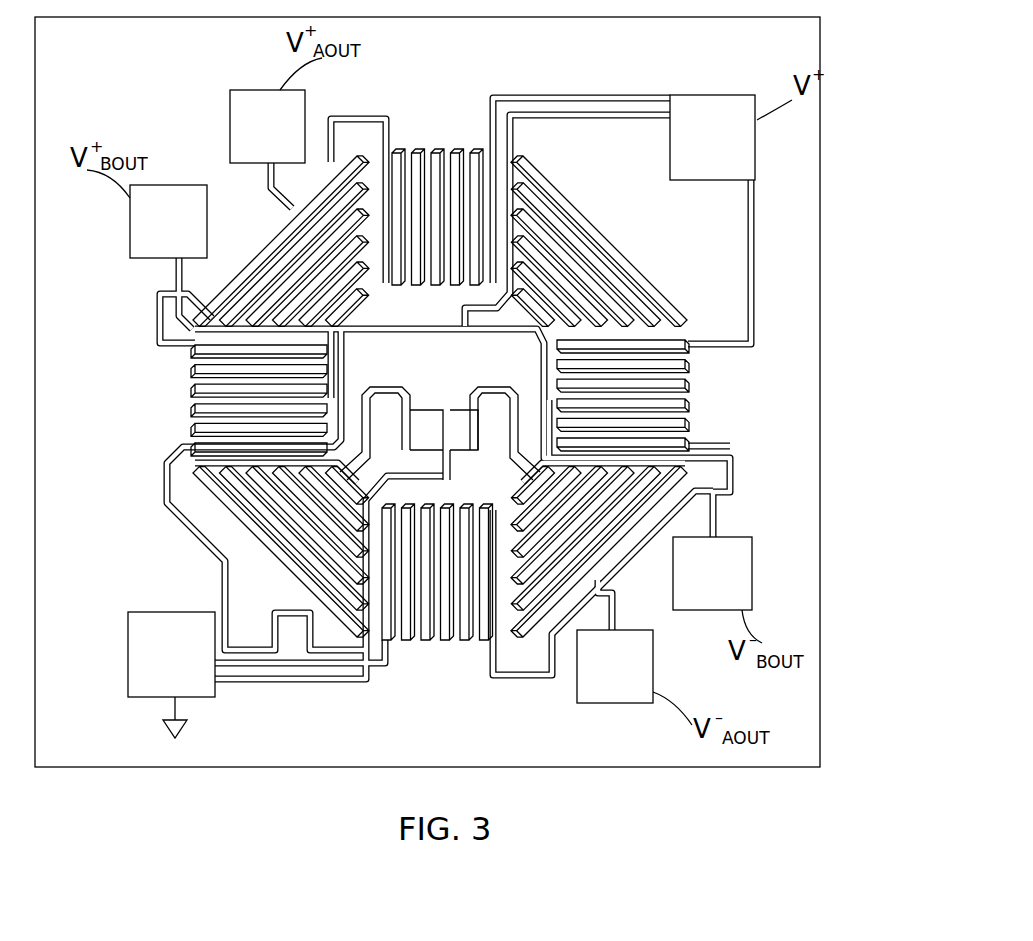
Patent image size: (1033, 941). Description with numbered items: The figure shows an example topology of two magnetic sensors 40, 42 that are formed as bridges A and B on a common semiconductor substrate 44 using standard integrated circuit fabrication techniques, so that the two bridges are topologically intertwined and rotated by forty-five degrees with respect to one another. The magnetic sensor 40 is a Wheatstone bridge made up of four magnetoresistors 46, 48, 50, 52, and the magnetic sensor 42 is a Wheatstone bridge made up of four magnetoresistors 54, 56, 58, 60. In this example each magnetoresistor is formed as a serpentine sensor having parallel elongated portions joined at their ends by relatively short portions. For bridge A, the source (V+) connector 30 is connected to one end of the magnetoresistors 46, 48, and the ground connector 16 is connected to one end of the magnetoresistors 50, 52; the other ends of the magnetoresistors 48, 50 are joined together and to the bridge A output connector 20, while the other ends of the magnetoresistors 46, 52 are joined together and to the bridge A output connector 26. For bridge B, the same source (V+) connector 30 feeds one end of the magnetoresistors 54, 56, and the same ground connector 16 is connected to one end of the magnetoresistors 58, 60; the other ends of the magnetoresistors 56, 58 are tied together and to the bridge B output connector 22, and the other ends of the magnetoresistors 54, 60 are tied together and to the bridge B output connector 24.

The ground connector 16 is at (210, 697).
The bridge A output connector 20 is at (246, 90).
The bridge B output connector 22 is at (130, 235).
The bridge B output connector 24 is at (752, 548).
The bridge A output connector 26 is at (632, 705).
The source (V+) connector 30 is at (705, 95).
The magnetic sensor 40 is at (461, 402).
The magnetic sensor 42 is at (114, 491).
The semiconductor substrate 44 is at (820, 745).
The magnetoresistor 46 is at (690, 397).
The magnetoresistor 48 is at (418, 160).
The magnetoresistor 50 is at (193, 395).
The magnetoresistor 52 is at (435, 645).
The magnetoresistor 54 is at (612, 238).
The magnetoresistor 56 is at (265, 240).
The magnetoresistor 58 is at (263, 553).
The magnetoresistor 60 is at (630, 562).